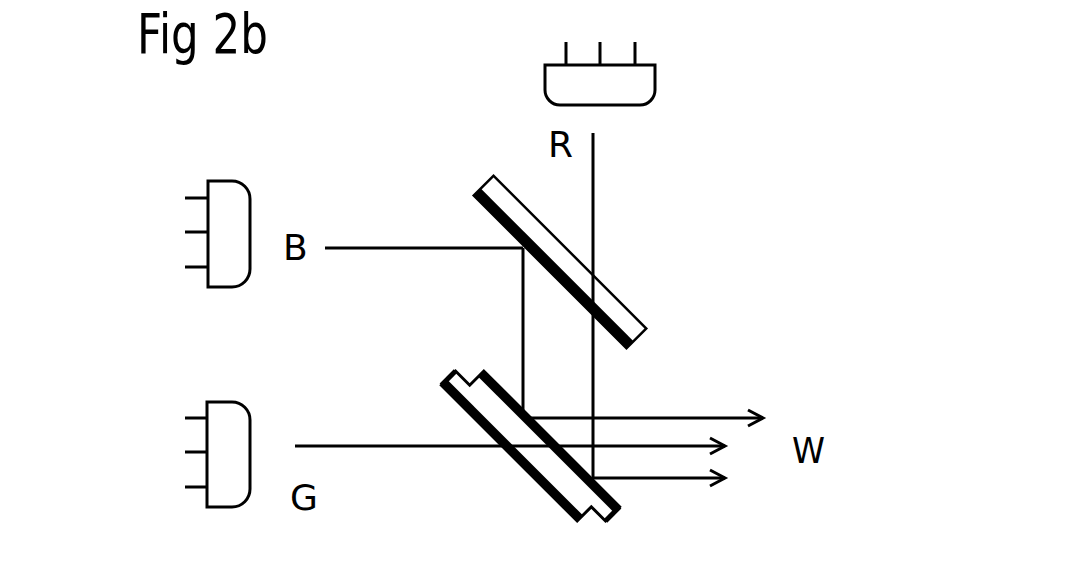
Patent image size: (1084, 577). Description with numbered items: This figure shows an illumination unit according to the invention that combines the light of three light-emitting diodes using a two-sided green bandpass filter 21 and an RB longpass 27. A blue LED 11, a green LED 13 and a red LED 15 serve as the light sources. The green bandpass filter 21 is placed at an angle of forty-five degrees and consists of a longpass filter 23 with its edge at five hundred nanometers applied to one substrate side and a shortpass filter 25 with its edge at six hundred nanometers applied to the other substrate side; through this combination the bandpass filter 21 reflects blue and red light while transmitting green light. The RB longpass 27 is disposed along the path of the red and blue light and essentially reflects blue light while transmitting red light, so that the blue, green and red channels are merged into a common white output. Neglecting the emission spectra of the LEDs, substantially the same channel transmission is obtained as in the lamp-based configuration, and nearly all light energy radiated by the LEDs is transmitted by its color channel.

The blue LED 11 is at (220, 178).
The green LED 13 is at (220, 509).
The red LED 15 is at (656, 78).
The green bandpass filter 21 is at (610, 522).
The longpass filter 23 is at (617, 498).
The shortpass filter 25 is at (522, 468).
The RB longpass 27 is at (595, 262).